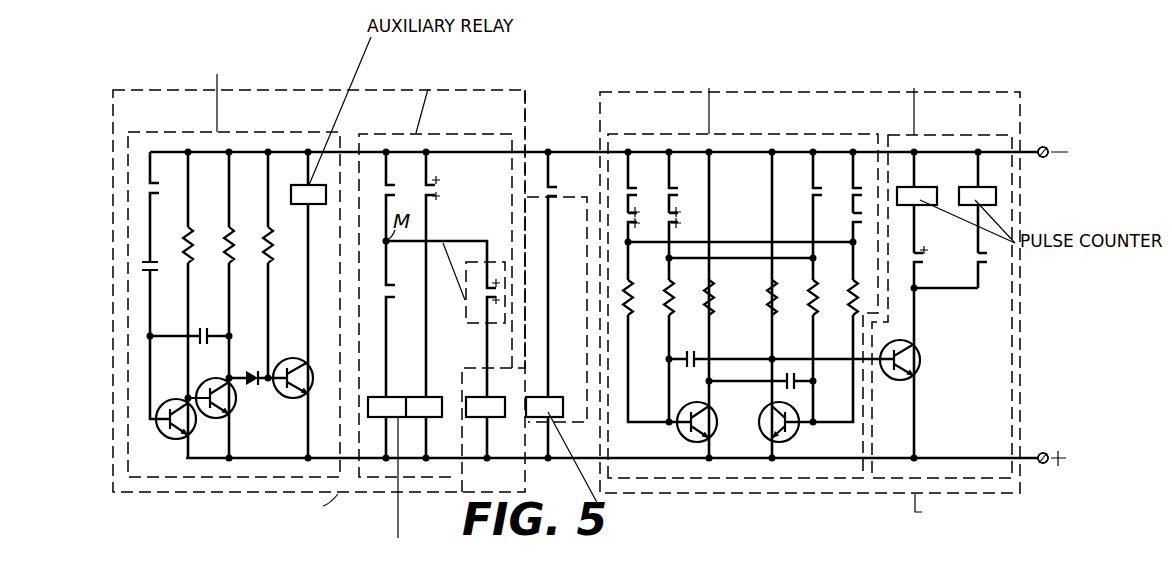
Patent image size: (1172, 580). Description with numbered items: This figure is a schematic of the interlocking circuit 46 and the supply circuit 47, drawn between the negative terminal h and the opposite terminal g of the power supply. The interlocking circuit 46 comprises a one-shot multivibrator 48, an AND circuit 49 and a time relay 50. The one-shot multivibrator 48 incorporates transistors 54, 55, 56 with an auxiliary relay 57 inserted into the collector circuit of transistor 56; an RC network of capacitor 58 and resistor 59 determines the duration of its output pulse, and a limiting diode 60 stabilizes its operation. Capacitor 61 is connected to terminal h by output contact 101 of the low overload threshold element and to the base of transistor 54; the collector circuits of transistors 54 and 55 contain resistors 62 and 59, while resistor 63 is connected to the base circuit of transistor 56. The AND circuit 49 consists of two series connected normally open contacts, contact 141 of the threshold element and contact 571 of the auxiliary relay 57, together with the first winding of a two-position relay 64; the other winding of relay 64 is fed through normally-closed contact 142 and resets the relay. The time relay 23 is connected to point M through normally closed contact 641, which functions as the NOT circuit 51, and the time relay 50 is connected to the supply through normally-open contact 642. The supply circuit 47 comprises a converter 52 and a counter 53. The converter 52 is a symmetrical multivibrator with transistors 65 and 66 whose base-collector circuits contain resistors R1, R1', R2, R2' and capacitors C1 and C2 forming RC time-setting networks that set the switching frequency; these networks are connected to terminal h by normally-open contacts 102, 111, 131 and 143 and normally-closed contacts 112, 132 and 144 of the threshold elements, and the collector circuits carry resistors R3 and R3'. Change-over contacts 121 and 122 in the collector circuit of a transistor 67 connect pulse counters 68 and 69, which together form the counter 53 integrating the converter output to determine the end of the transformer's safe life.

The interlocking circuit 46 is at (347, 490).
The supply circuit 47 is at (850, 497).
The one-shot multivibrator 48 is at (226, 122).
The AND circuit 49 is at (422, 123).
The time relay 50 is at (555, 396).
The NOT circuit 51 is at (465, 310).
The converter 52 is at (716, 123).
The counter 53 is at (921, 124).
The transistor 54 is at (170, 440).
The transistor 55 is at (234, 416).
The transistor 56 is at (290, 398).
The auxiliary relay 57 is at (296, 188).
The capacitor 58 is at (204, 326).
The resistor 59 is at (234, 226).
The limiting diode 60 is at (250, 372).
The capacitor 61 is at (160, 275).
The resistor 62 is at (194, 226).
The resistor 63 is at (273, 248).
The two-position relay 64 is at (404, 396).
The transistor 65 is at (678, 436).
The transistor 66 is at (797, 436).
The transistor 67 is at (888, 382).
The pulse counter 68 is at (922, 196).
The pulse counter 69 is at (980, 196).
The time relay 23 is at (494, 396).
The output contact 101 is at (176, 180).
The normally-open contact 102 is at (650, 186).
The normally-open contact 111 is at (690, 186).
The normally-closed contact 112 is at (648, 224).
The change-over contact 121 is at (940, 255).
The change-over contact 122 is at (994, 255).
The normally-open contact 131 is at (871, 186).
The normally-closed contact 132 is at (689, 232).
The normally open contact 141 is at (410, 182).
The normally-closed contact 142 is at (456, 182).
The normally-open contact 143 is at (835, 186).
The normally-closed contact 144 is at (864, 220).
The relay contact 571 is at (405, 280).
The normally closed contact 641 is at (500, 293).
The normally-open contact 642 is at (571, 274).
The resistor R1 is at (657, 332).
The resistor R2 is at (681, 340).
The resistor R3 is at (722, 342).
The resistor R1' is at (832, 332).
The resistor R2' is at (825, 340).
The resistor R3' is at (784, 342).
The capacitor C1 is at (788, 372).
The capacitor C2 is at (690, 352).
The negative terminal h is at (1040, 148).
The positive supply terminal g is at (1040, 466).